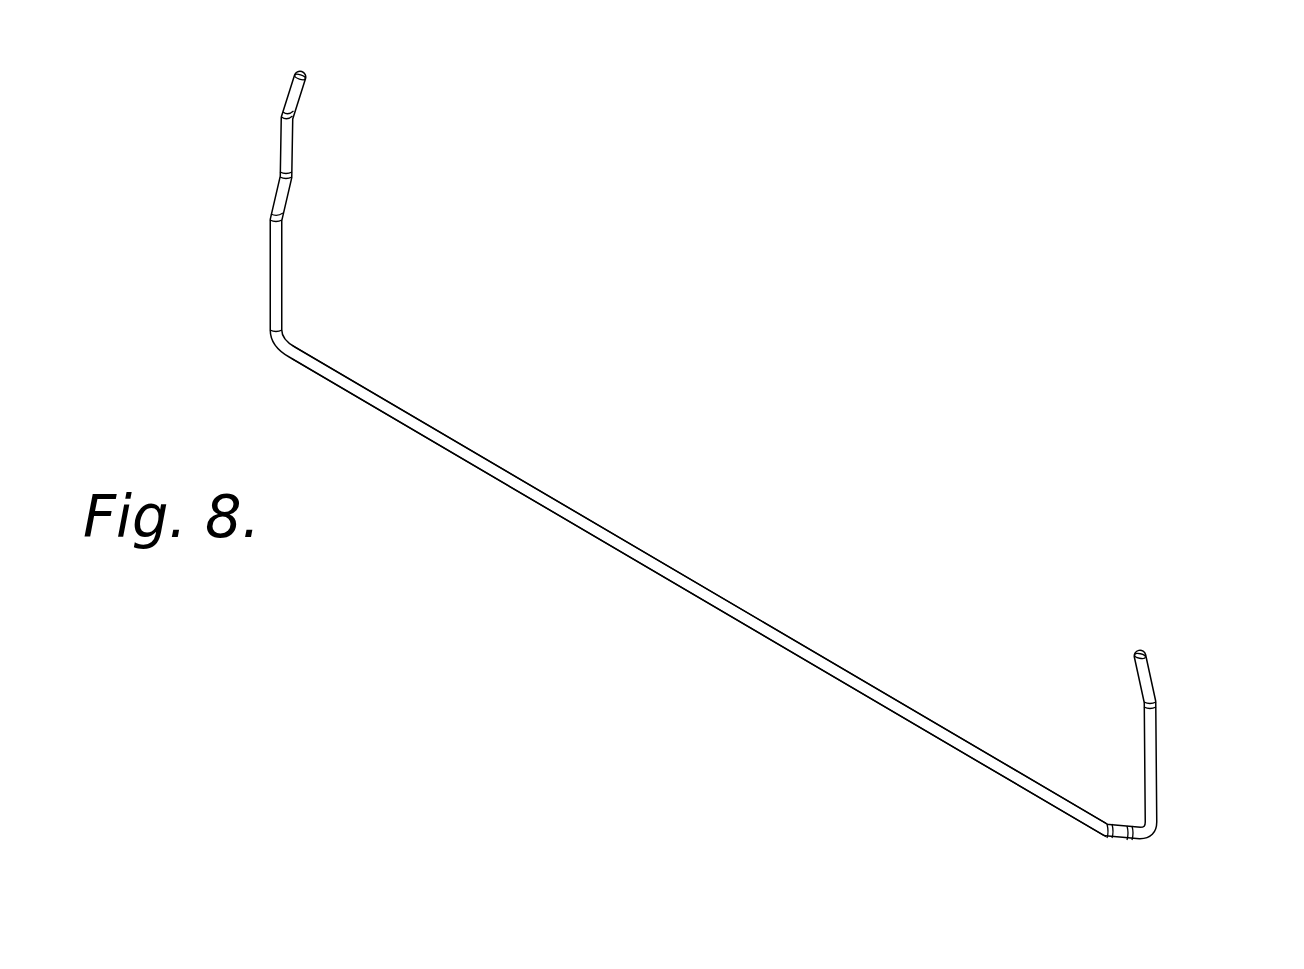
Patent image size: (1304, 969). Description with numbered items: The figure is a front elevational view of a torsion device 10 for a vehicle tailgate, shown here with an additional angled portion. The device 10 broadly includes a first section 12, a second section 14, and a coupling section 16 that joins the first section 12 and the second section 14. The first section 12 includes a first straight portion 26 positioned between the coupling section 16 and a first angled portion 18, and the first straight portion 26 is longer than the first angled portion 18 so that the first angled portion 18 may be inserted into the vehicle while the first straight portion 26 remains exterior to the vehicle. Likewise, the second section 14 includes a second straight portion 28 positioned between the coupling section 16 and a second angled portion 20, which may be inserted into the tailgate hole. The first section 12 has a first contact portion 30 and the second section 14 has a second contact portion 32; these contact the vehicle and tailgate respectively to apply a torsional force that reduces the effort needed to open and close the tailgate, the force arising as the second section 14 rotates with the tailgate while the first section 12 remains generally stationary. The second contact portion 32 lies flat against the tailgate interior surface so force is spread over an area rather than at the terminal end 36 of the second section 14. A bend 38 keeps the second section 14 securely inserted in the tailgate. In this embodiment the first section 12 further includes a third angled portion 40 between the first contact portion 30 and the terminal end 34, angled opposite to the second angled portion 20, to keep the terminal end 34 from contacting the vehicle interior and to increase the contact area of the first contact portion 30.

The torsion device 10 is at (655, 440).
The first section 12 is at (222, 281).
The second section 14 is at (1187, 841).
The coupling section 16 is at (718, 603).
The first angled portion 18 is at (285, 205).
The second angled portion 20 is at (1150, 687).
The first straight portion 26 is at (279, 295).
The second straight portion 28 is at (1154, 772).
The first contact portion 30 is at (292, 148).
The second contact portion 32 is at (1145, 722).
The terminal end 34 is at (304, 74).
The terminal end 36 is at (1136, 651).
The bend 38 is at (1128, 839).
The third angled portion 40 is at (288, 100).